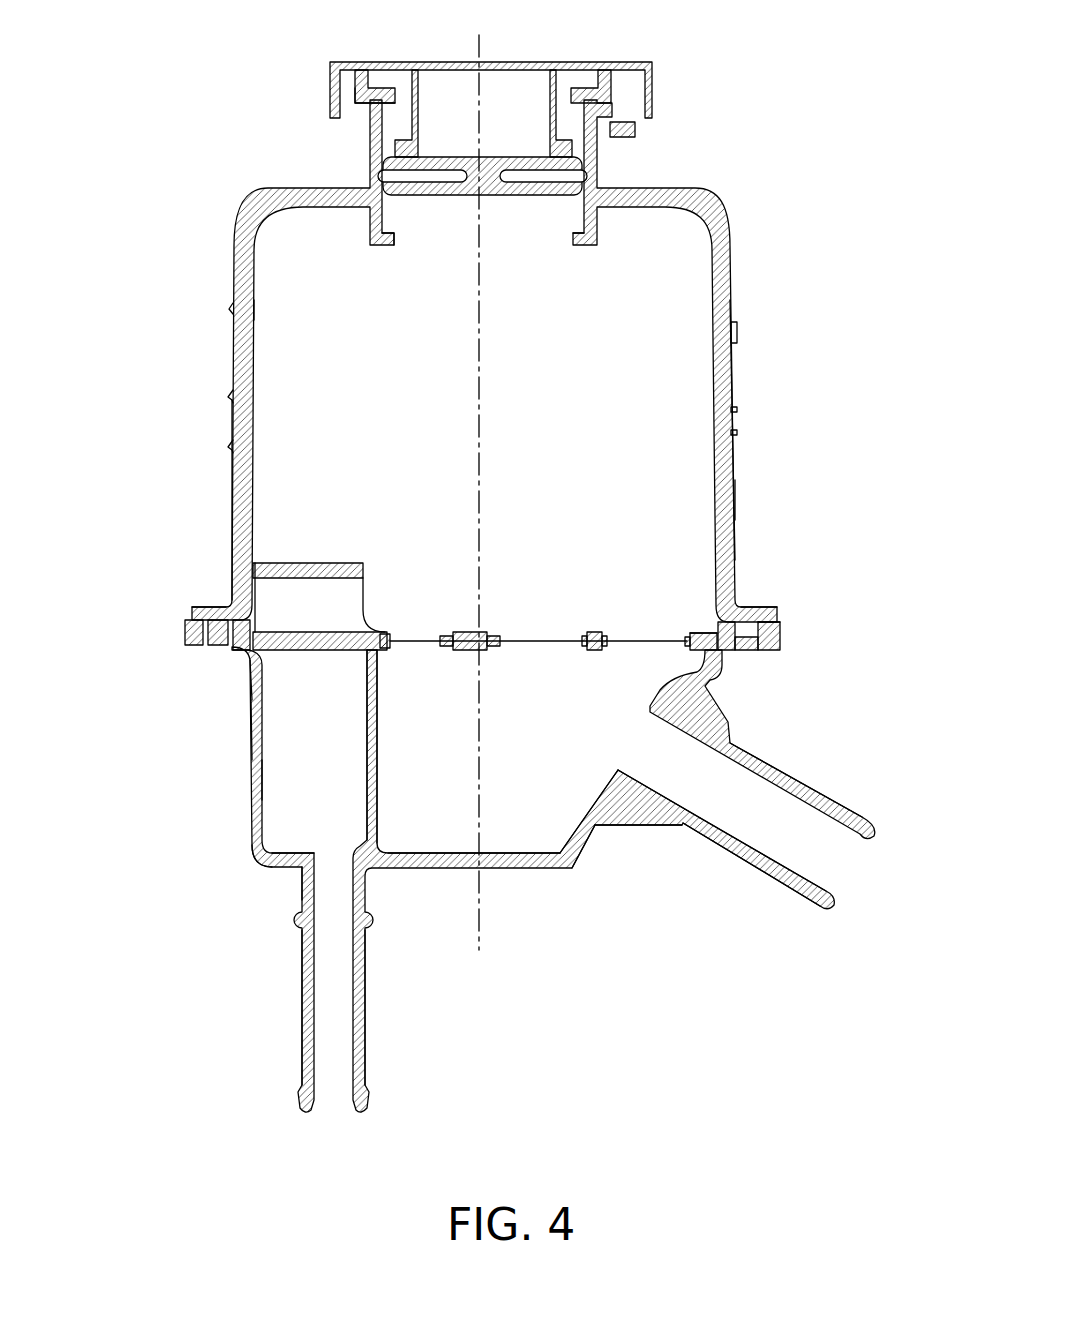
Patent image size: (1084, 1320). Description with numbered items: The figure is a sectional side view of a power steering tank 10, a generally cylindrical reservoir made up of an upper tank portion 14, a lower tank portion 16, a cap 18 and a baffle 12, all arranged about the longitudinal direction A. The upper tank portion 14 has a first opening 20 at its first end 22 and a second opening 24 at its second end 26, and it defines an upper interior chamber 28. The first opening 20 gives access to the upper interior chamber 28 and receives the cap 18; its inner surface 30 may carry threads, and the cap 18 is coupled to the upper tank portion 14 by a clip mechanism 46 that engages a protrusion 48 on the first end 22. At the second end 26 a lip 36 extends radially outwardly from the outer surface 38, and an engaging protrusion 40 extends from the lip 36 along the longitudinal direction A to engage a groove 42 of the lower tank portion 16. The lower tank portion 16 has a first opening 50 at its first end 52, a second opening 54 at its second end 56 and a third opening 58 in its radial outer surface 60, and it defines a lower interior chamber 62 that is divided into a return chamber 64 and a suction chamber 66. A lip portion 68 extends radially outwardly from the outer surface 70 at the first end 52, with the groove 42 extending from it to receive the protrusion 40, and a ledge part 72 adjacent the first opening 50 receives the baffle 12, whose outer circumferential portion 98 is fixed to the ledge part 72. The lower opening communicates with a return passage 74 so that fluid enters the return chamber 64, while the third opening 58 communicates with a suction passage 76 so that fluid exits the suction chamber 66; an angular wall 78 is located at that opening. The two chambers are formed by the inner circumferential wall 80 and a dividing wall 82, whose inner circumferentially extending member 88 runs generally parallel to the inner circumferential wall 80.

The power steering tank 10 is at (864, 306).
The baffle 12 is at (548, 609).
The upper tank portion 14 is at (740, 380).
The lower tank portion 16 is at (513, 879).
The cap 18 is at (513, 112).
The first opening 20 is at (584, 215).
The first end 22 is at (478, 361).
The second opening 24 is at (702, 608).
The second end 26 is at (232, 577).
The upper interior chamber 28 is at (668, 291).
The inner surface 30 is at (382, 215).
The lip 36 is at (780, 613).
The outer surface 38 is at (738, 494).
The engaging protrusion 40 is at (780, 633).
The groove 42 is at (212, 612).
The clip mechanism 46 is at (638, 128).
The protrusion 48 is at (357, 116).
The first opening 50 is at (312, 882).
The first end 52 is at (262, 870).
The second opening 54 is at (700, 628).
The second end 56 is at (723, 664).
The third opening 58 is at (632, 772).
The radial outer surface 60 is at (729, 719).
The lower interior chamber 62 is at (263, 736).
The return chamber 64 is at (338, 805).
The suction chamber 66 is at (527, 820).
The lip portion 68 is at (192, 638).
The outer surface 70 is at (250, 681).
The ledge part 72 is at (266, 650).
The return passage 74 is at (302, 1041).
The suction passage 76 is at (782, 889).
The angular wall 78 is at (592, 849).
The inner circumferential wall 80 is at (263, 786).
The dividing wall 82 is at (378, 700).
The inner circumferentially extending member 88 is at (378, 769).
The outer circumferential portion 98 is at (700, 652).
The longitudinal direction A is at (490, 31).